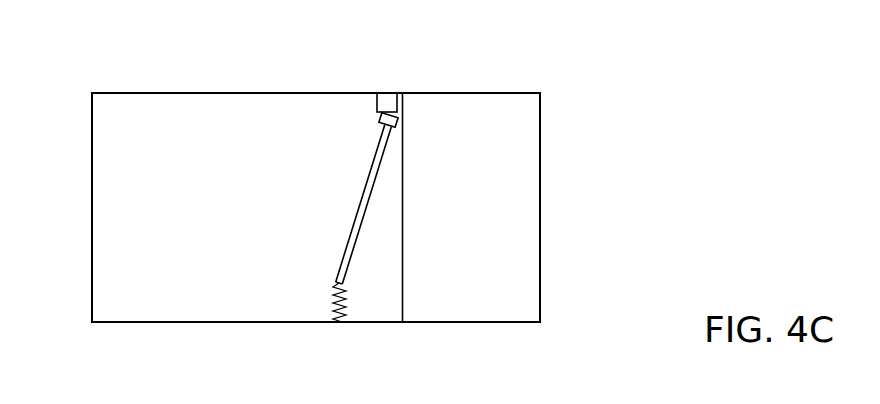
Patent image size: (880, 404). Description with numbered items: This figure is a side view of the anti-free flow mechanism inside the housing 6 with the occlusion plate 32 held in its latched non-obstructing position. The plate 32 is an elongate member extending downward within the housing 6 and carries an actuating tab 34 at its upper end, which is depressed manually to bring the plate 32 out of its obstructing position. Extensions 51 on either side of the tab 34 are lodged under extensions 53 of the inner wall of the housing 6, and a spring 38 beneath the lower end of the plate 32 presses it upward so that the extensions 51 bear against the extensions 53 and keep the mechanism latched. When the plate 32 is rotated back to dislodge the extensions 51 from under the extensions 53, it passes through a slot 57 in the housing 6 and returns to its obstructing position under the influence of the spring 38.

The housing 6 is at (92, 192).
The occlusion plate 32 is at (368, 197).
The actuating tab 34 is at (402, 121).
The spring 38 is at (344, 307).
The extensions 51 is at (381, 117).
The extensions of the inner wall of the housing 53 is at (389, 101).
The slot 57 is at (360, 93).